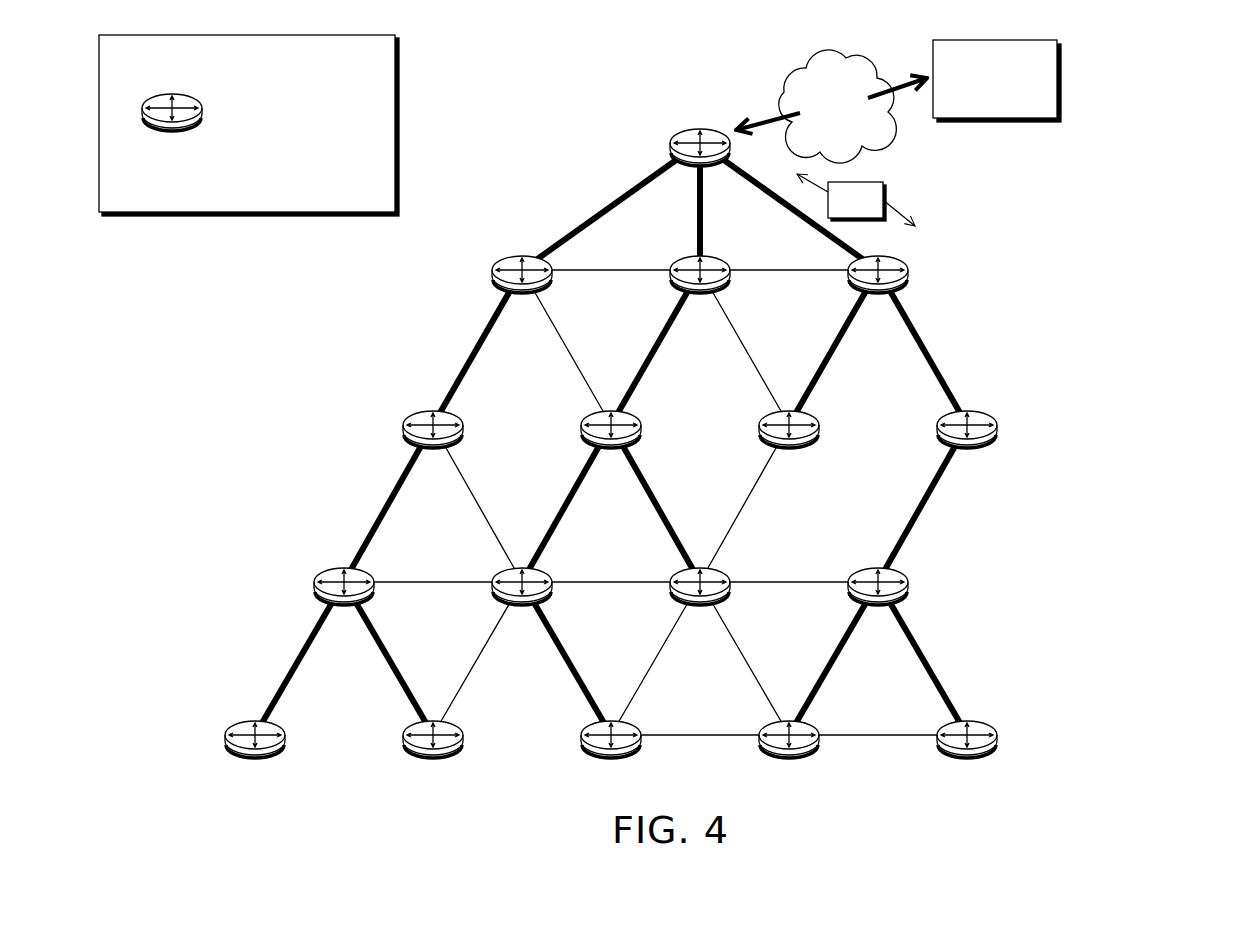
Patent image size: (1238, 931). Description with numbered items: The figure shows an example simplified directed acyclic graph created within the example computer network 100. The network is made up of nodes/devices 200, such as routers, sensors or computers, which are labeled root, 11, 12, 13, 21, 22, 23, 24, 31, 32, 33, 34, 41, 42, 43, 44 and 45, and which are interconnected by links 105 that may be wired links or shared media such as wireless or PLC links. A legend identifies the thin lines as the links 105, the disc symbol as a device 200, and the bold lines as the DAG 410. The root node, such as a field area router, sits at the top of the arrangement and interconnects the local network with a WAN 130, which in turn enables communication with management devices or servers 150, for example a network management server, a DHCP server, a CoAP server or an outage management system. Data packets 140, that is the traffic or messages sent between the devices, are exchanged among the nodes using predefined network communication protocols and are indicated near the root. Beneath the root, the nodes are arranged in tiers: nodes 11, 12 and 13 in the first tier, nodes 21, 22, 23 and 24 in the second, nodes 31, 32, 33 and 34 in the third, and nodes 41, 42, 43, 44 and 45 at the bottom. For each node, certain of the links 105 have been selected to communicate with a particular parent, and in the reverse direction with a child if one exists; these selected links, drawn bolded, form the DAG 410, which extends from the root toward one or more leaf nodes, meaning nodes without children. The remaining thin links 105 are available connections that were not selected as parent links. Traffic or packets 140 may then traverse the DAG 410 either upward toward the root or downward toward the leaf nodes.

The computer network 100 is at (1144, 90).
The links 105 is at (131, 64).
The WAN 130 is at (820, 132).
The data packets 140 is at (840, 214).
The servers 150 is at (980, 103).
The nodes/devices 200 is at (248, 113).
The DAG 410 is at (131, 171).
The node 11 is at (522, 294).
The node 12 is at (700, 294).
The node 13 is at (878, 294).
The node 21 is at (433, 448).
The node 22 is at (611, 448).
The node 23 is at (789, 448).
The node 24 is at (967, 448).
The node 31 is at (344, 604).
The node 32 is at (522, 604).
The node 33 is at (700, 604).
The node 34 is at (878, 604).
The node 41 is at (255, 757).
The node 42 is at (433, 757).
The node 43 is at (611, 757).
The node 44 is at (789, 757).
The node 45 is at (967, 757).